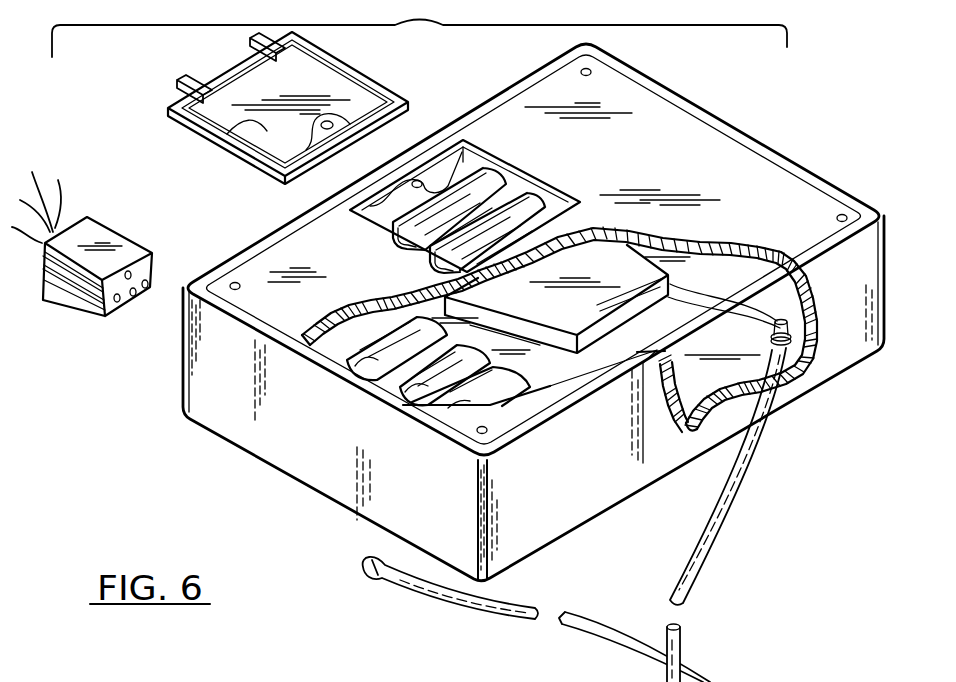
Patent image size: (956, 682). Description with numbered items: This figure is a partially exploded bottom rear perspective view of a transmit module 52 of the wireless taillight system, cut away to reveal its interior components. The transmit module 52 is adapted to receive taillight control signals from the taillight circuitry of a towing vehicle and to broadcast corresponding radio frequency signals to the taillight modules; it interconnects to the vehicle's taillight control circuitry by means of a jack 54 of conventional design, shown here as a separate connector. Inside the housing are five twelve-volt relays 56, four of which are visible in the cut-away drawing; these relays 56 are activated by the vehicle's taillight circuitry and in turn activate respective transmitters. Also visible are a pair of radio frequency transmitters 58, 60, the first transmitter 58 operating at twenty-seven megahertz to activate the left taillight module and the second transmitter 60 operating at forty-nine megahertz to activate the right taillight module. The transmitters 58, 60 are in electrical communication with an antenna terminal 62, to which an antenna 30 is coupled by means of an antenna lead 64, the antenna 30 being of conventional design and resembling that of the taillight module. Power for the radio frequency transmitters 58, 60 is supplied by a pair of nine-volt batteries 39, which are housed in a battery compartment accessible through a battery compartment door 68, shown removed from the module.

The antenna 30 is at (763, 681).
The 9-volt batteries 39 is at (483, 178).
The transmit module 52 is at (807, 173).
The jack 54 is at (73, 285).
The 12-volt relays 56 is at (313, 318).
The first radio frequency transmitter 58 is at (587, 292).
The second radio frequency transmitter 60 is at (643, 320).
The antenna terminal 62 is at (783, 345).
The antenna lead 64 is at (697, 557).
The battery compartment door 68 is at (228, 133).